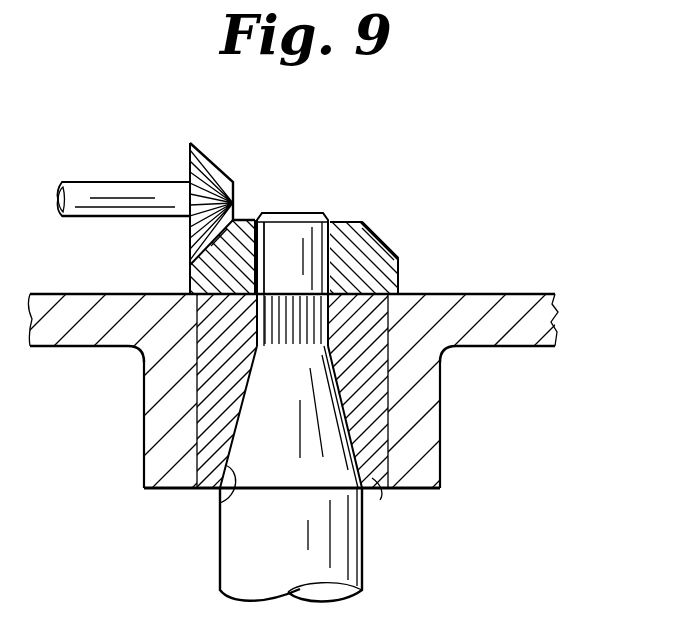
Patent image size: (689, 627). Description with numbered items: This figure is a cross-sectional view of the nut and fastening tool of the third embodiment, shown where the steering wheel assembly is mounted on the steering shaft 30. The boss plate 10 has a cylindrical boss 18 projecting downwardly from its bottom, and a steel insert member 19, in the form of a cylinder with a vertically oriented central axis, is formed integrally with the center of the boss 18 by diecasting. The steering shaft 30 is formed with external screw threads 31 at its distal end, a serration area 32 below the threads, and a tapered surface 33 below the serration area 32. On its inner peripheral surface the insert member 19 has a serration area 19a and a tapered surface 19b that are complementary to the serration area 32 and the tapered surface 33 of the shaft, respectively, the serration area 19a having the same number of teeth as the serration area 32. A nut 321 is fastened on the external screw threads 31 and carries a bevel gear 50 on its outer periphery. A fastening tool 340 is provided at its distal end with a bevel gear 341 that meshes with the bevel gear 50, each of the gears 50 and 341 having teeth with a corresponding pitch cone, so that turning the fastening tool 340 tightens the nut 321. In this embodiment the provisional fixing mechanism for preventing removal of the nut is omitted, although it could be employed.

The boss plate 10 is at (540, 320).
The boss 18 is at (428, 457).
The insert member 19 is at (380, 500).
The serration area 19a is at (310, 318).
The tapered surface 19b is at (220, 503).
The steering shaft 30 is at (365, 566).
The external screw threads 31 is at (290, 235).
The serration area 32 is at (268, 330).
The tapered surface 33 is at (245, 440).
The nut 321 is at (352, 238).
The bevel gear 50 is at (385, 237).
The fastening tool 340 is at (120, 190).
The bevel gear 341 is at (218, 160).